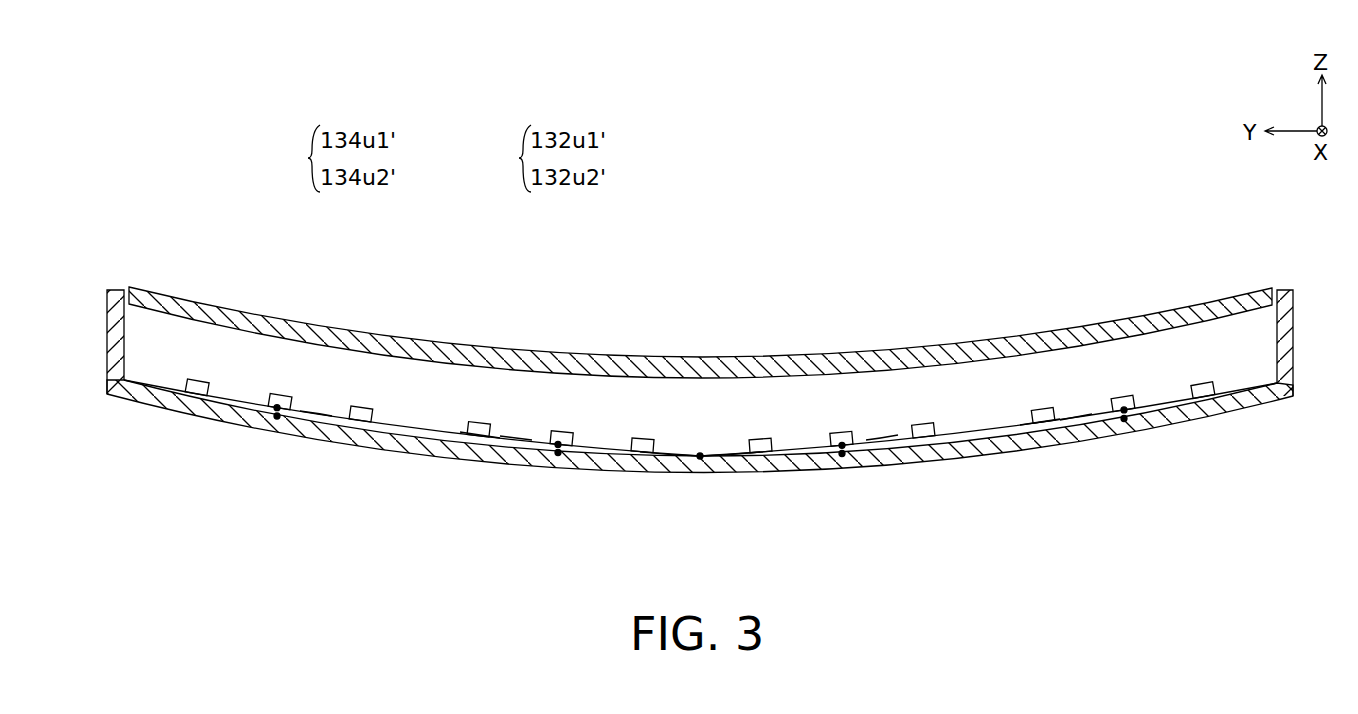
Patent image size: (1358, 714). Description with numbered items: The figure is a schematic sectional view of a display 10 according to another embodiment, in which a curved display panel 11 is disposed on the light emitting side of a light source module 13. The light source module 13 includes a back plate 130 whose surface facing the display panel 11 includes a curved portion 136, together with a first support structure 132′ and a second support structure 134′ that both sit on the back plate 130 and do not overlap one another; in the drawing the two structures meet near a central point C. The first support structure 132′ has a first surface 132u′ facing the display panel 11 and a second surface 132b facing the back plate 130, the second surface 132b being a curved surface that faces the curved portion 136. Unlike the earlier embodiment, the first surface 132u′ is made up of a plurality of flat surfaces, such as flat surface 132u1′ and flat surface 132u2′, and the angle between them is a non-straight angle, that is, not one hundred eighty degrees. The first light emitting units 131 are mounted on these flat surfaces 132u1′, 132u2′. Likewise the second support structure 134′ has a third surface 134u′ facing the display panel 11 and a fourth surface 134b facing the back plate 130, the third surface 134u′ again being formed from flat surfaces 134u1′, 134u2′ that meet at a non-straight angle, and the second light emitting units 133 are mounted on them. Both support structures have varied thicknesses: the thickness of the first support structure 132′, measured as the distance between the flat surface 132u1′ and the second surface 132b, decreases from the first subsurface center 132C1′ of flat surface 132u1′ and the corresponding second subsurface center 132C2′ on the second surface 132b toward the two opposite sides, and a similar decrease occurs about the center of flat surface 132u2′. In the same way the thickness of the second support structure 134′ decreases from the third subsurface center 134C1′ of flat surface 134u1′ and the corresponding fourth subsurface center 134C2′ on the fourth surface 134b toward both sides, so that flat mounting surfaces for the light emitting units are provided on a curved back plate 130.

The display 10 is at (85, 63).
The display panel 11 is at (1189, 310).
The light source module 13 is at (1182, 450).
The back plate 130 is at (803, 462).
The first light emitting units 131 is at (762, 439).
The second light emitting units 133 is at (648, 438).
The curved portion 136 is at (778, 460).
The first support structure 132′ is at (930, 440).
The second surface 132b is at (1046, 448).
The first surface 132u′ is at (494, 158).
The flat surface 132u1′ is at (1074, 398).
The flat surface 132u2′ is at (889, 430).
The first subsurface center 132C1′ is at (1127, 399).
The second subsurface center 132C2′ is at (1127, 429).
The second support structure 134′ is at (360, 424).
The fourth surface 134b is at (488, 455).
The third surface 134u′ is at (281, 158).
The flat surface 134u1′ is at (516, 422).
The flat surface 134u2′ is at (322, 403).
The third subsurface center 134C1′ is at (561, 433).
The fourth subsurface center 134C2′ is at (561, 464).
The center point C is at (699, 459).